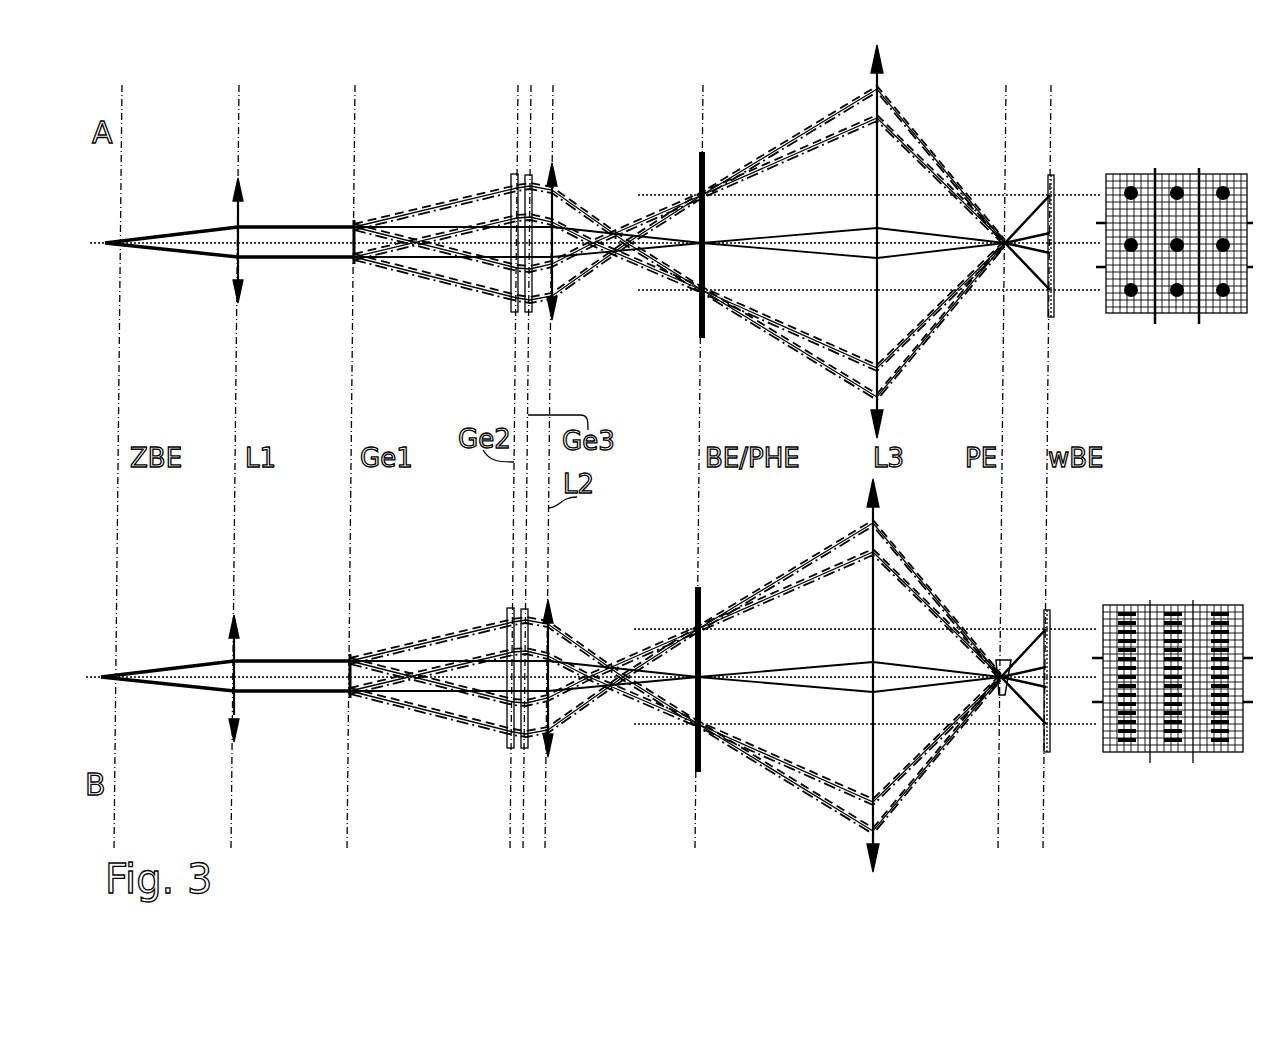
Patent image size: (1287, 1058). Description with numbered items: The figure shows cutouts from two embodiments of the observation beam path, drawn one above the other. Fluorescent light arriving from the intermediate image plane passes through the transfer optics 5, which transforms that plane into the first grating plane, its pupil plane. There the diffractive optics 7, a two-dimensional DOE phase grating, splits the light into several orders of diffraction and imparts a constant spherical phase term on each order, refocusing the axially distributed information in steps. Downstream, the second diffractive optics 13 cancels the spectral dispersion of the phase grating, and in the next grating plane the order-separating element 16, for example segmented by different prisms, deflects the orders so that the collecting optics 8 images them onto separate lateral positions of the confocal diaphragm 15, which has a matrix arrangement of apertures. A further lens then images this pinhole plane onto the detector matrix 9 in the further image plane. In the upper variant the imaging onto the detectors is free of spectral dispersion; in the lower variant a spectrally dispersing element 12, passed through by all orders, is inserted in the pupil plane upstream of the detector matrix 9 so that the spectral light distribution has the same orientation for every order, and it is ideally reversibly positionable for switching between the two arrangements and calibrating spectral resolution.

The transfer optics 5 is at (240, 182).
The diffractive optics 7 is at (357, 203).
The diffractive optics 13 is at (513, 172).
The order-separating element 16 is at (531, 178).
The collecting optics 8 is at (554, 170).
The confocal diaphragm 15 is at (705, 160).
The detector matrix 9 is at (1055, 176).
The spectrally dispersing element 12 is at (960, 728).